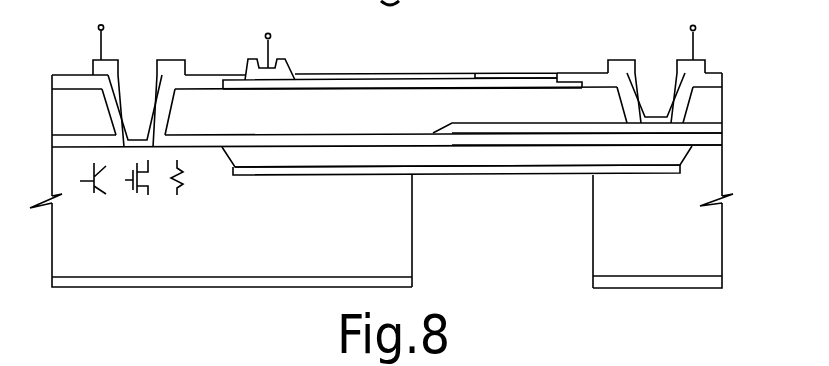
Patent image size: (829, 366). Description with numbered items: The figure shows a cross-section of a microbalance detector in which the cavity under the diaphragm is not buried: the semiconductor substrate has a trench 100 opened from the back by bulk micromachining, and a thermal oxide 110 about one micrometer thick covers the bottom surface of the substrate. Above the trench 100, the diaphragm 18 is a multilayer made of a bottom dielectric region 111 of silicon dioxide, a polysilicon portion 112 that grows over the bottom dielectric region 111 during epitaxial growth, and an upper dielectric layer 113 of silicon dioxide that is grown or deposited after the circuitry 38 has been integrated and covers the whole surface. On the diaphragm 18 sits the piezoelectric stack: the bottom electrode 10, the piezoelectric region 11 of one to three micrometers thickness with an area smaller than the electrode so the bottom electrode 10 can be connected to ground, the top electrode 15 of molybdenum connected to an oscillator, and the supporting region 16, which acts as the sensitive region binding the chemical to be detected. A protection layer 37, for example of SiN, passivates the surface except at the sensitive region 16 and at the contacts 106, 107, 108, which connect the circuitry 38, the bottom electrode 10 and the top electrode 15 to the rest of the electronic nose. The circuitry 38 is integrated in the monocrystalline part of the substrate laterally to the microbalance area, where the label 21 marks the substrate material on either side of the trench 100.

The bottom electrode 10 is at (692, 130).
The piezoelectric region 11 is at (240, 128).
The top electrode 15 is at (342, 83).
The supporting region 16 is at (527, 72).
The diaphragm 18 is at (454, 166).
The substrate 21 is at (400, 261).
The protection layer 37 is at (193, 77).
The circuitry 38 is at (144, 208).
The trench 100 is at (518, 243).
The contact 106 is at (136, 65).
The contact 107 is at (278, 45).
The contact 108 is at (659, 55).
The thermal oxide 110 is at (710, 282).
The bottom dielectric region 111 is at (643, 170).
The polysilicon portion 112 is at (673, 157).
The upper dielectric layer 113 is at (707, 137).